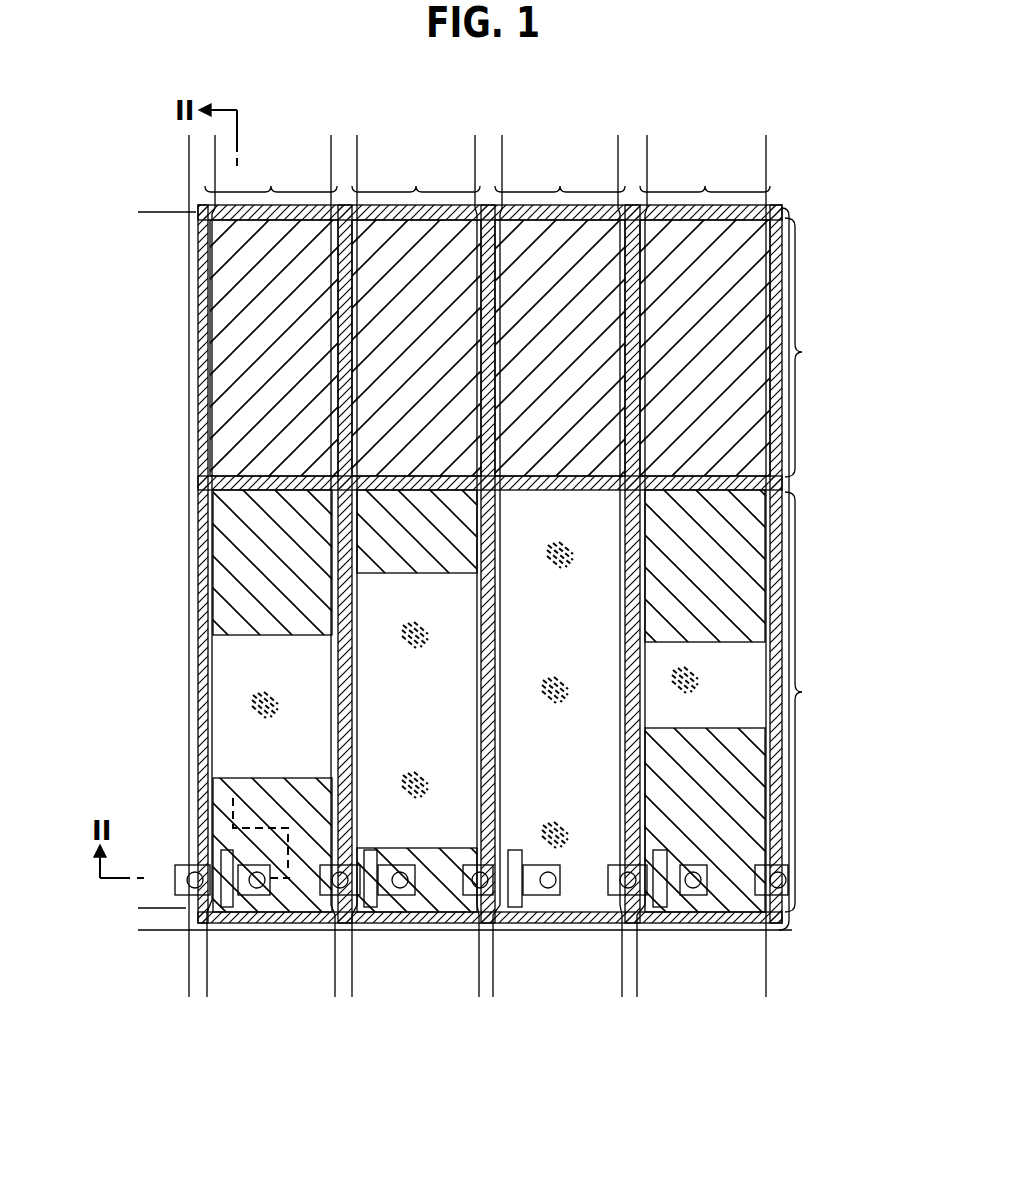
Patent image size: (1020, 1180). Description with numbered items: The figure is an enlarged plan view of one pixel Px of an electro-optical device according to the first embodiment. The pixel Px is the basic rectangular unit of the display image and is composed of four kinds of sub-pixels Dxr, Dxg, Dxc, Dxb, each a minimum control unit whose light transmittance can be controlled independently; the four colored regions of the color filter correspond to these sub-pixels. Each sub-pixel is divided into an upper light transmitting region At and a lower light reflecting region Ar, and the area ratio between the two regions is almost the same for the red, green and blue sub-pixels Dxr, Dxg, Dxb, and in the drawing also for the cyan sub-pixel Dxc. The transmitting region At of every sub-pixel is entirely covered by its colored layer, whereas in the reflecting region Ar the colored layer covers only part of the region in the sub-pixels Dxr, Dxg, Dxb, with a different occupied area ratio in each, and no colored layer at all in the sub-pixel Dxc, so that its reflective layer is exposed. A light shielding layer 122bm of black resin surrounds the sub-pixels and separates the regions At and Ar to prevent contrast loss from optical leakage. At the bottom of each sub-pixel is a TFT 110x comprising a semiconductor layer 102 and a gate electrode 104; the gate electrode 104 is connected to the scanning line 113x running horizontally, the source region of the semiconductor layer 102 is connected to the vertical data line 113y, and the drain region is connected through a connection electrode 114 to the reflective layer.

The semiconductor layer 102 is at (440, 946).
The gate electrode 104 is at (228, 846).
The TFT (switching element) 110x is at (250, 911).
The scanning line 113x is at (412, 932).
The data line 113y is at (192, 382).
The connection electrode 114 is at (688, 912).
The light shielding layer 122bm is at (555, 610).
The pixel Px is at (122, 170).
The light transmitting region At is at (807, 347).
The light reflecting region Ar is at (807, 702).
The sub-pixel (red) Dxr is at (271, 175).
The sub-pixel (green) Dxg is at (416, 175).
The sub-pixel (cyan) Dxc is at (560, 175).
The sub-pixel (blue) Dxb is at (705, 175).